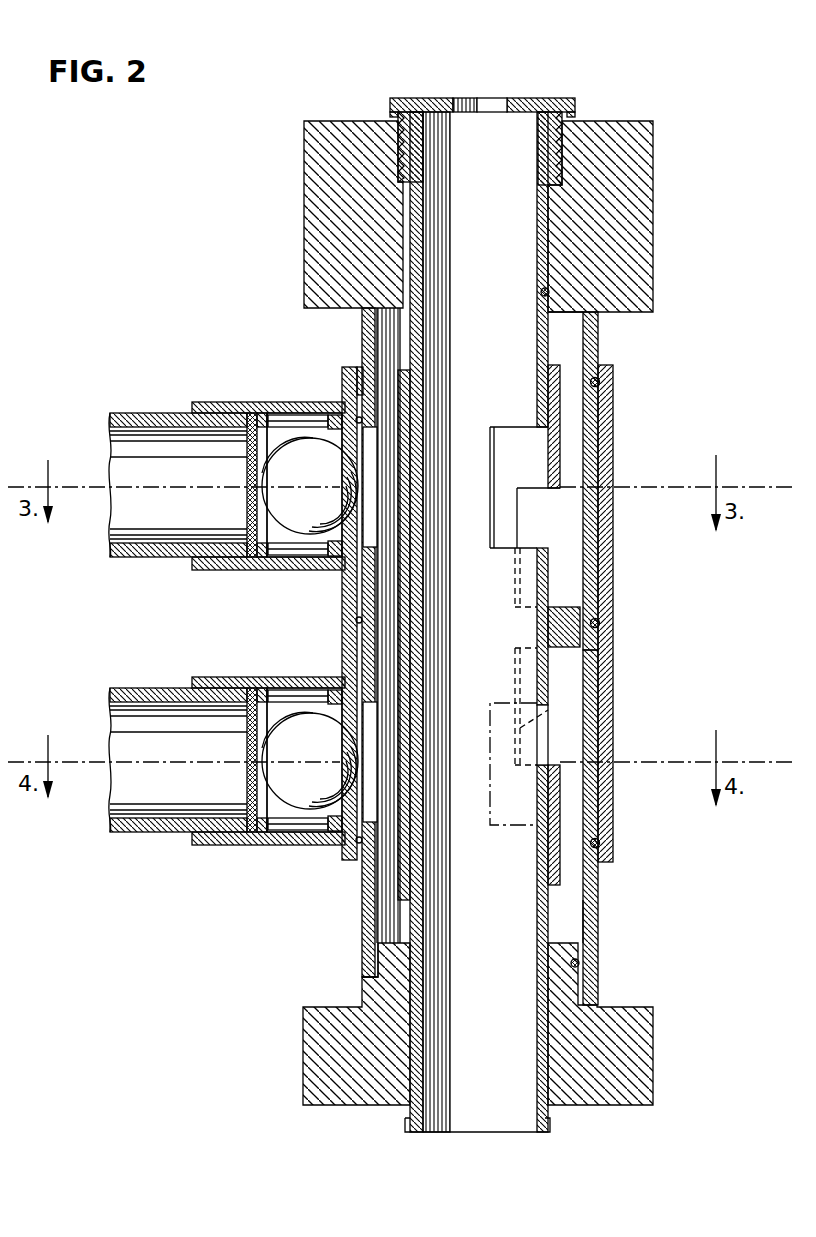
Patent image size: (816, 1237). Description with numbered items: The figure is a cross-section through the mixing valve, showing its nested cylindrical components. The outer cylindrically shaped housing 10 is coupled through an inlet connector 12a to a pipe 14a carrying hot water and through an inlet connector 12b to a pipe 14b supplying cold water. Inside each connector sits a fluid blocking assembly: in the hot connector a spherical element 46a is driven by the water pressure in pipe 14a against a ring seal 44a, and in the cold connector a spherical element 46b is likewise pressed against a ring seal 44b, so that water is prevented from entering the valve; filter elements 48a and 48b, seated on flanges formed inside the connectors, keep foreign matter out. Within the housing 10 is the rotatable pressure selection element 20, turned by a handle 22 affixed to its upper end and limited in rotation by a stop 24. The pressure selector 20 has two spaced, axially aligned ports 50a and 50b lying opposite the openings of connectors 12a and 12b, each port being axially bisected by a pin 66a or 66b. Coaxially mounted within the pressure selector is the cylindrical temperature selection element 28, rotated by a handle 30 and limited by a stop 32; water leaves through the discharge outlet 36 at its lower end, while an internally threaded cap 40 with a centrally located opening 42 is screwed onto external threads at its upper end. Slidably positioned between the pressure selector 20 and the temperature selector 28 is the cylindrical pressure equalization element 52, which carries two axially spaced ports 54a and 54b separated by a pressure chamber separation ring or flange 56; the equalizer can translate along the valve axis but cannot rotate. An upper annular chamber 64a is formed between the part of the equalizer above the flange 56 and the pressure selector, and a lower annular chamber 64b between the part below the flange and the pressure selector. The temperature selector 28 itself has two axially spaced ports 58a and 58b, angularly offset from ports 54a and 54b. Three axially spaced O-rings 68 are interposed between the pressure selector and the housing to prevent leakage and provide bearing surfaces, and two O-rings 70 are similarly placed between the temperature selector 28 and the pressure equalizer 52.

The housing 10 is at (607, 578).
The inlet connector 12a is at (225, 402).
The inlet connector 12b is at (225, 677).
The pipe 14a is at (140, 412).
The pipe 14b is at (140, 687).
The pressure selection element 20 is at (602, 333).
The handle 22 is at (643, 173).
The stop 24 is at (345, 372).
The temperature selection element 28 is at (557, 918).
The handle 30 is at (643, 1040).
The stop 32 is at (367, 990).
The discharge outlet 36 is at (552, 1126).
The internally threaded cap 40 is at (567, 98).
The centrally located opening 42 is at (490, 97).
The ring seal 44a is at (330, 570).
The ring seal 44b is at (330, 840).
The spherical element 46a is at (270, 493).
The spherical element 46b is at (270, 770).
The filter element 48a is at (247, 467).
The filter element 48b is at (247, 742).
The port 50a is at (380, 445).
The port 50b is at (385, 814).
The pressure equalization element 52 is at (553, 457).
The port 54a is at (518, 528).
The port 54b is at (520, 728).
The pressure chamber separation ring 56 is at (580, 645).
The port 58a is at (507, 427).
The port 58b is at (540, 747).
The upper annular chamber 64a is at (572, 422).
The lower annular chamber 64b is at (568, 860).
The pin 66a is at (367, 535).
The pin 66b is at (375, 712).
The O-ring 68 is at (600, 387).
The O-ring 70 is at (542, 290).